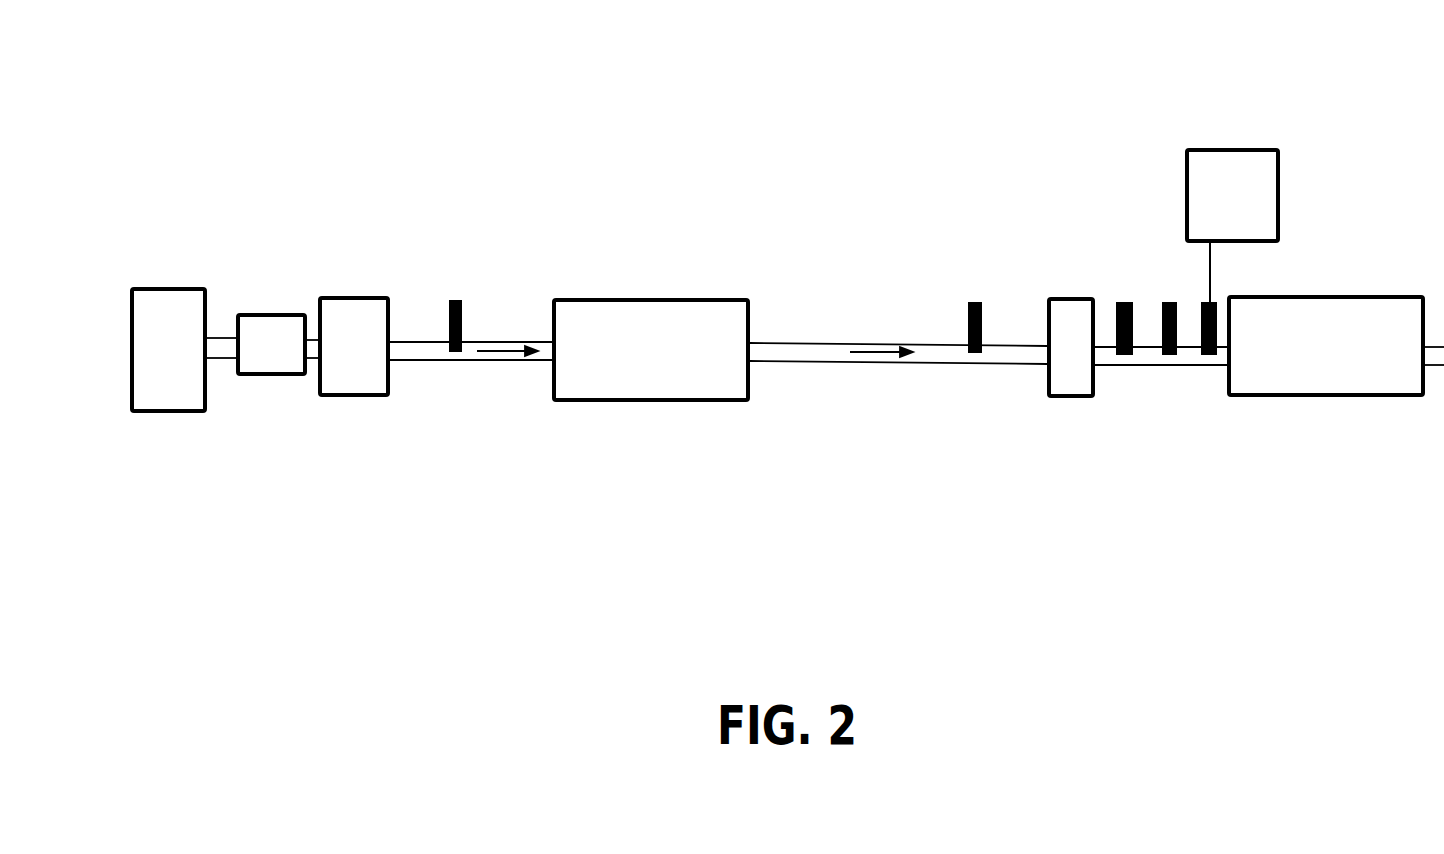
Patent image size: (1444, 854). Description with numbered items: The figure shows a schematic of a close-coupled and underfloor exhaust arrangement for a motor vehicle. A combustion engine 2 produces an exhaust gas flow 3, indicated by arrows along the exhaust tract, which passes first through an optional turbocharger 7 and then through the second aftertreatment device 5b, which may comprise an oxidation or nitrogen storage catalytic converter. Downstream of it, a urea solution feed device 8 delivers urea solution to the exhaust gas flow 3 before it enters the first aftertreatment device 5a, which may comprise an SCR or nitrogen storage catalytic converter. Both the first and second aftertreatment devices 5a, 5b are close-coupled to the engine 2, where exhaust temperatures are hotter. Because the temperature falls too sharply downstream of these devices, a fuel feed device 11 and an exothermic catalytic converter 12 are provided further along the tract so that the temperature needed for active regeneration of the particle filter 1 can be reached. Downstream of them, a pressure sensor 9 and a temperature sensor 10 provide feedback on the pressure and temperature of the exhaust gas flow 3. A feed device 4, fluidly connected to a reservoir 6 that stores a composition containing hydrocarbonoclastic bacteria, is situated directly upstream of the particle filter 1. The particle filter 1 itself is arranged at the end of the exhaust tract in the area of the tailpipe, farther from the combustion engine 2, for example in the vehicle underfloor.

The particle filter 1 is at (1325, 295).
The combustion engine 2 is at (170, 287).
The exhaust gas flow 3 is at (505, 352).
The feed device 4 is at (1210, 355).
The first aftertreatment device 5a is at (652, 298).
The second aftertreatment device 5b is at (358, 296).
The reservoir 6 is at (1247, 148).
The turbocharger 7 is at (272, 313).
The urea solution feed device 8 is at (460, 300).
The pressure sensor 9 is at (1125, 355).
The temperature sensor 10 is at (1170, 355).
The fuel feed device 11 is at (973, 302).
The exothermic catalytic converter 12 is at (1070, 297).